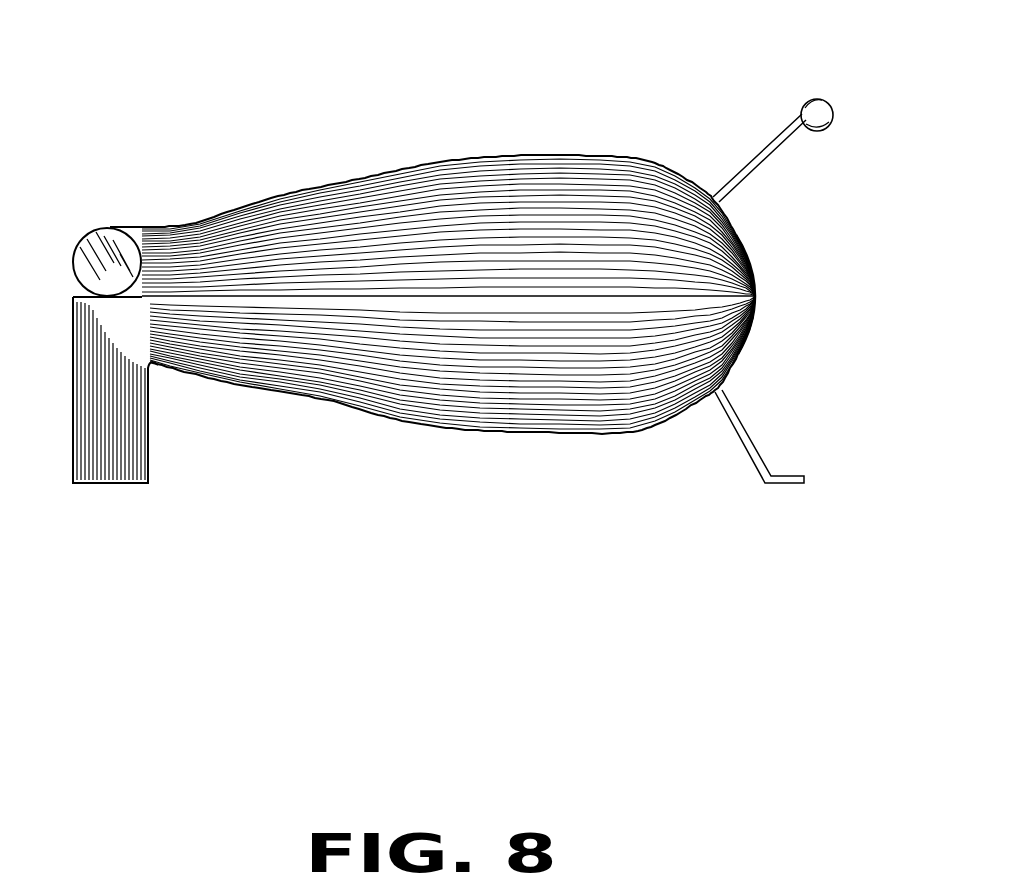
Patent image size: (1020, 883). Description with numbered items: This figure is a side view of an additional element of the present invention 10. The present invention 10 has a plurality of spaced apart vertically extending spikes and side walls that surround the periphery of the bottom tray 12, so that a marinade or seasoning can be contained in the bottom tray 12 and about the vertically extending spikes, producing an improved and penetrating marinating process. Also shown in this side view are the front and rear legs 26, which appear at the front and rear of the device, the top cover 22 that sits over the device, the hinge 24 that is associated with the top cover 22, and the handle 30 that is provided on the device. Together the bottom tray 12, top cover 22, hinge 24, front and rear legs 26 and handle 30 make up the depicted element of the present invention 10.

The present invention 10 is at (318, 107).
The bottom tray 12 is at (463, 375).
The top cover 22 is at (485, 200).
The hinge 24 is at (105, 262).
The front and rear legs 26 is at (123, 412).
The handle 30 is at (803, 111).